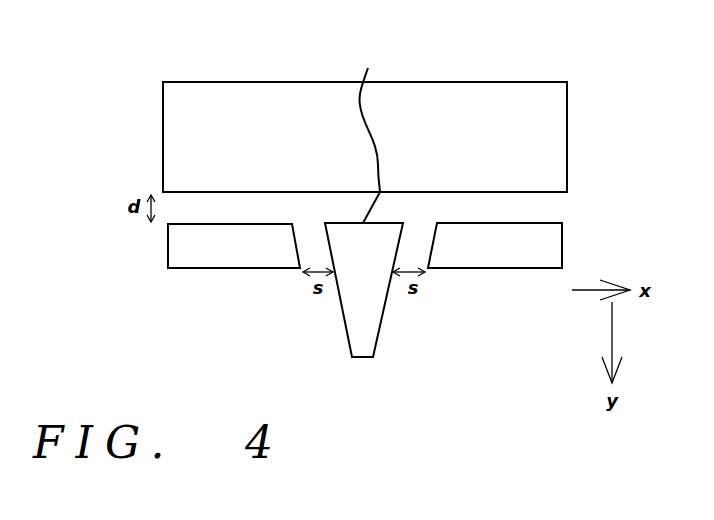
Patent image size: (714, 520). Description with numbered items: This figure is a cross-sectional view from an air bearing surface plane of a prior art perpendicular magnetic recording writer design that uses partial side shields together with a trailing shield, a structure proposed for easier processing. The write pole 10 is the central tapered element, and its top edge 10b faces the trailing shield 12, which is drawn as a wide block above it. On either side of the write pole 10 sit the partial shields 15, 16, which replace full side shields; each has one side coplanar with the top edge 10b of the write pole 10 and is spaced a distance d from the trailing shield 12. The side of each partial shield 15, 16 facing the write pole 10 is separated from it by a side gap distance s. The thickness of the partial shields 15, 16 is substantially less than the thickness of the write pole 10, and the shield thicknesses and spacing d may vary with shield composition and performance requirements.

The write pole 10 is at (363, 345).
The top edge 10b is at (372, 130).
The trailing shield 12 is at (548, 125).
The partial shield 15 is at (230, 257).
The partial shield 16 is at (500, 257).